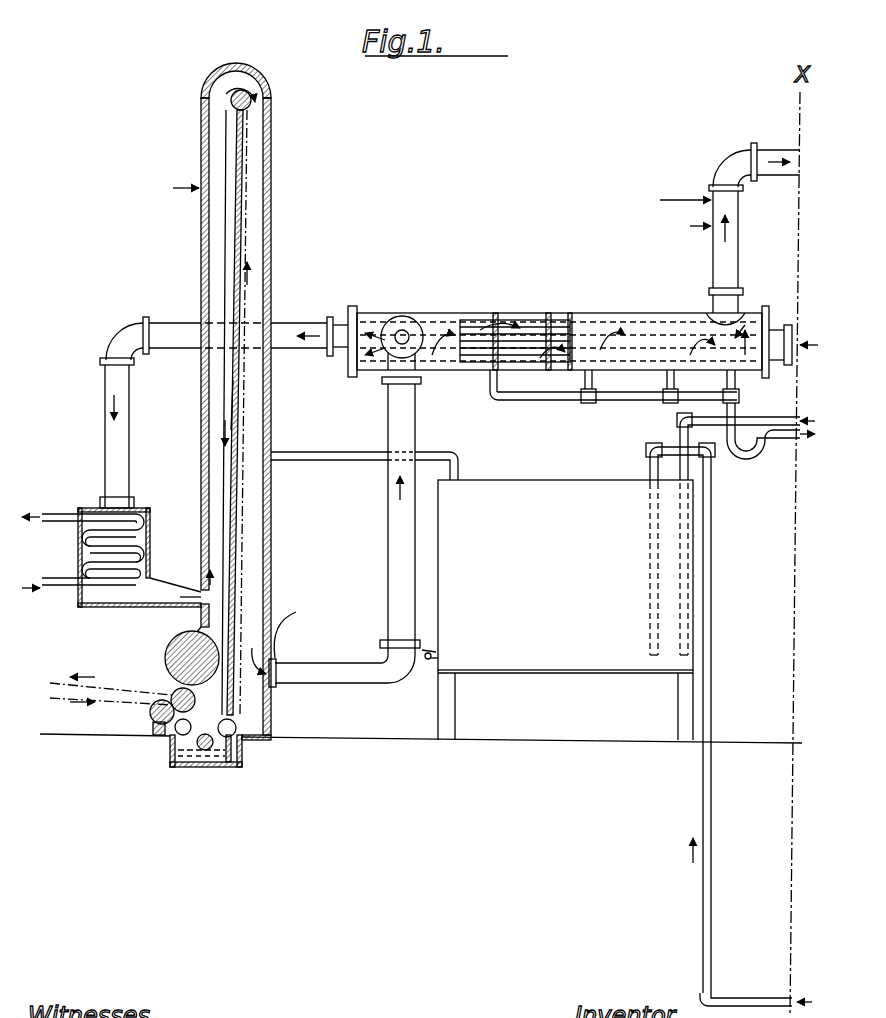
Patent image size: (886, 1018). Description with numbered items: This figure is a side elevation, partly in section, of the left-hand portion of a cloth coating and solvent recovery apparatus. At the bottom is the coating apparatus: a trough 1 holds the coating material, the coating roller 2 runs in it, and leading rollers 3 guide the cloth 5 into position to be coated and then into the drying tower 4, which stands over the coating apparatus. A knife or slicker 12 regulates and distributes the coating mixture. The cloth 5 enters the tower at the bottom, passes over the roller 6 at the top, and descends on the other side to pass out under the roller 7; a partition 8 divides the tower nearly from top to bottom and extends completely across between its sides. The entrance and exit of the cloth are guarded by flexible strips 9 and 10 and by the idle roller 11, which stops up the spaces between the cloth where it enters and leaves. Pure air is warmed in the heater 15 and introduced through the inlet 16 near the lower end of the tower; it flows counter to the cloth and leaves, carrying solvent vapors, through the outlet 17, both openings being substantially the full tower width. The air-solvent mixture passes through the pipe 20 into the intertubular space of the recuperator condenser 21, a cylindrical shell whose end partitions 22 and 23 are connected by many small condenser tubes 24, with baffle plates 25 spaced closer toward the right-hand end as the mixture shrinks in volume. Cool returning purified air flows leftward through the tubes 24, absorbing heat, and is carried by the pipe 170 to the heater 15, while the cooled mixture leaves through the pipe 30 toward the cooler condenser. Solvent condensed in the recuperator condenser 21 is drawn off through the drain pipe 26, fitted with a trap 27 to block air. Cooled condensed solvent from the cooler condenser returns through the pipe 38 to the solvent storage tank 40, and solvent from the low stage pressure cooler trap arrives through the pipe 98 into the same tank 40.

The trough 1 is at (176, 760).
The coating roller 2 is at (205, 751).
The leading rollers 3 is at (152, 712).
The drying tower 4 is at (264, 268).
The cloth 5 is at (252, 224).
The roller 6 is at (251, 101).
The roller 7 is at (178, 651).
The partition 8 is at (238, 406).
The flexible strip 9 is at (152, 728).
The flexible strip 10 is at (197, 626).
The idle roller 11 is at (174, 695).
The knife or slicker 12 is at (243, 749).
The heater 15 is at (140, 506).
The inlet 16 is at (160, 590).
The outlet 17 is at (305, 685).
The pipe 20 is at (398, 541).
The recuperator condenser 21 is at (612, 312).
The partition 22 is at (380, 322).
The partition 23 is at (742, 326).
The condenser tubes 24 is at (560, 330).
The baffle plates 25 is at (509, 372).
The drain pipe 26 is at (655, 410).
The trap 27 is at (745, 460).
The pipe 30 is at (722, 266).
The drain pipe 38 is at (770, 411).
The solvent storage tank 40 is at (545, 609).
The pipe 98 is at (649, 578).
The pipe 170 is at (165, 325).